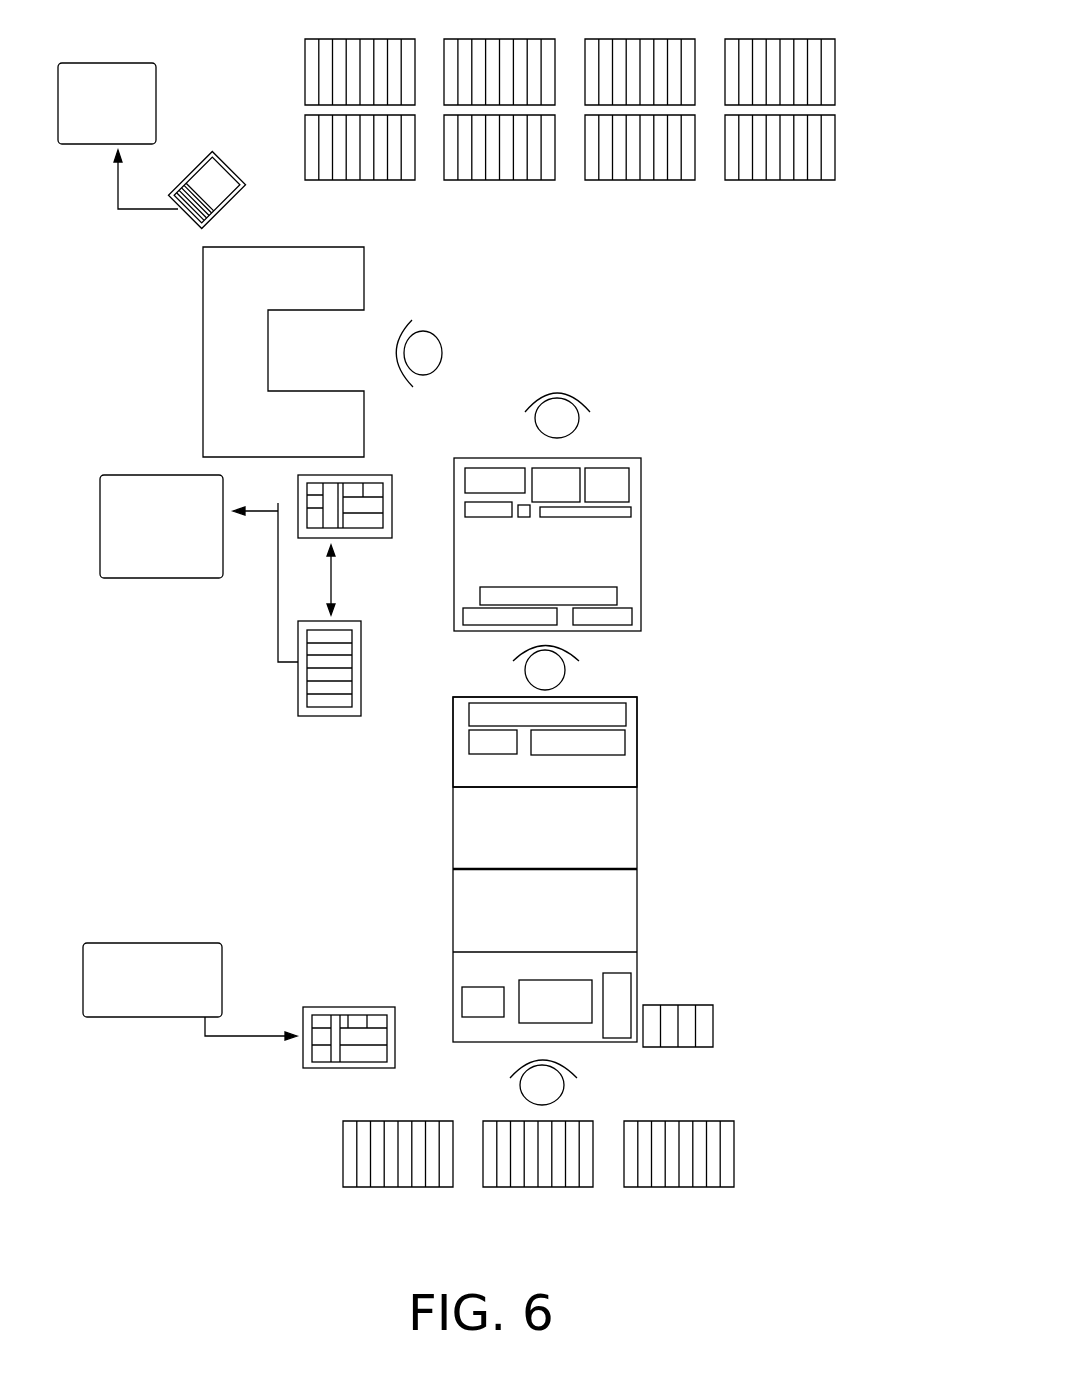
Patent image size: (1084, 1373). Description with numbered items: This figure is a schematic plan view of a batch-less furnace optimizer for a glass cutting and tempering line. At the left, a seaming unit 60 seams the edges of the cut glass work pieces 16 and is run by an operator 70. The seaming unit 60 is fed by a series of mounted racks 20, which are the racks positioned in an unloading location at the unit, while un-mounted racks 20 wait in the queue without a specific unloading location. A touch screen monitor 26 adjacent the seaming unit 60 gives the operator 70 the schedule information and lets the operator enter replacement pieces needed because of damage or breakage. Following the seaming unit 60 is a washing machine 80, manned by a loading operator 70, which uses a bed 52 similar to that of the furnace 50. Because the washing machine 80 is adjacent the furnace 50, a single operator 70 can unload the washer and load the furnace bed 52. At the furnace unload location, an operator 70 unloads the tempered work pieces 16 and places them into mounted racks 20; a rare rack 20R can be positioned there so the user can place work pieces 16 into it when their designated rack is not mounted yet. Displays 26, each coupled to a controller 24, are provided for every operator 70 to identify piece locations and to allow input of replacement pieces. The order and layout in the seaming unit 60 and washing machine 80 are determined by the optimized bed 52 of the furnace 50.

The cut glass work pieces 16 is at (539, 497).
The mounted racks 20 is at (350, 40).
The rare rack 20R is at (713, 1030).
The controller 24 is at (73, 113).
The touch screen monitor 26 is at (213, 180).
The furnace 50 is at (480, 817).
The bed 52 is at (620, 532).
The seaming unit 60 is at (224, 343).
The operator 70 is at (423, 348).
The washing machine 80 is at (534, 564).